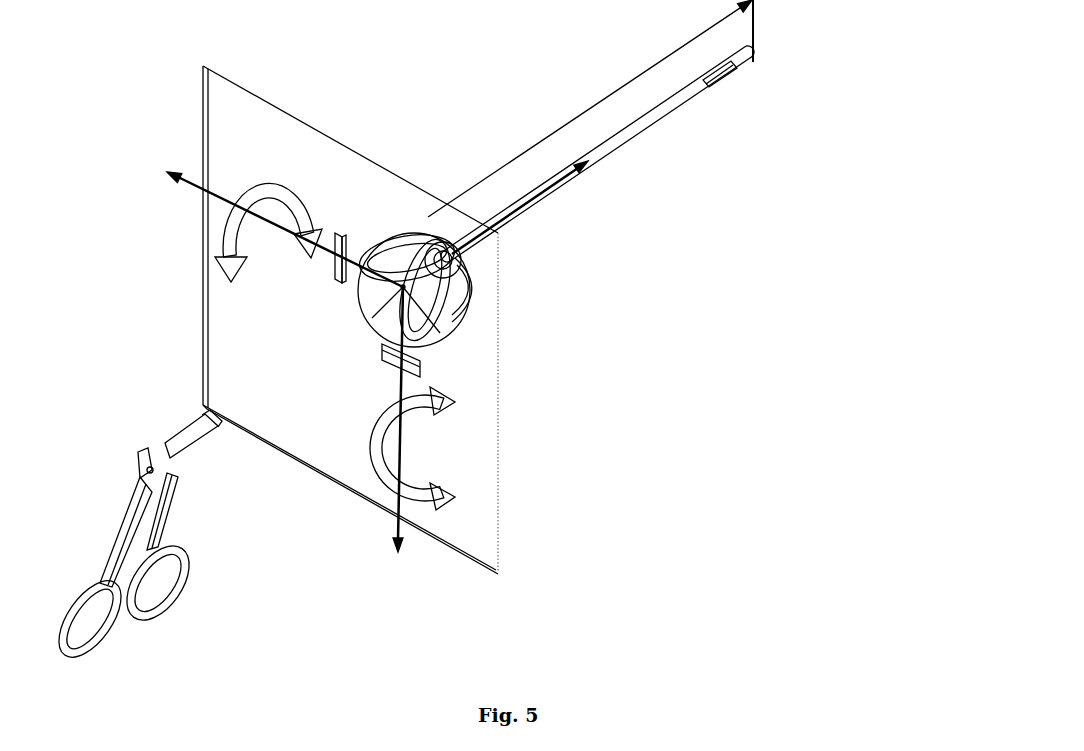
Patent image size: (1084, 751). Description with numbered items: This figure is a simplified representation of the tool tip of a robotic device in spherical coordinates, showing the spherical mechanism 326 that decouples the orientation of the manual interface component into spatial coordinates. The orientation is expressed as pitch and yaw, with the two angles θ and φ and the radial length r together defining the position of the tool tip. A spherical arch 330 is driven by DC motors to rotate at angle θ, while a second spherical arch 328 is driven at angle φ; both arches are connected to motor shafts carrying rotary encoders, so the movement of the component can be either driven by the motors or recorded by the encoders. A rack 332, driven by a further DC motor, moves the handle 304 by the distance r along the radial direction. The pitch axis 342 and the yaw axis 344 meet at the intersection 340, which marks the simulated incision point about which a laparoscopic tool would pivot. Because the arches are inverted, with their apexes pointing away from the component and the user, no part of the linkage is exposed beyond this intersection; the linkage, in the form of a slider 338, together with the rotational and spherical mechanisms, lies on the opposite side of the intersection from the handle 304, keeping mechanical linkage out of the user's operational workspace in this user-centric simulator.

The handle 304 is at (167, 610).
The spherical mechanism 326 is at (641, 292).
The spherical arch 328 is at (407, 223).
The spherical arch 330 is at (480, 300).
The rack 332 is at (603, 160).
The slider 338 is at (437, 243).
The intersection 340 is at (388, 294).
The pitch axis 342 is at (190, 178).
The yaw axis 344 is at (405, 508).